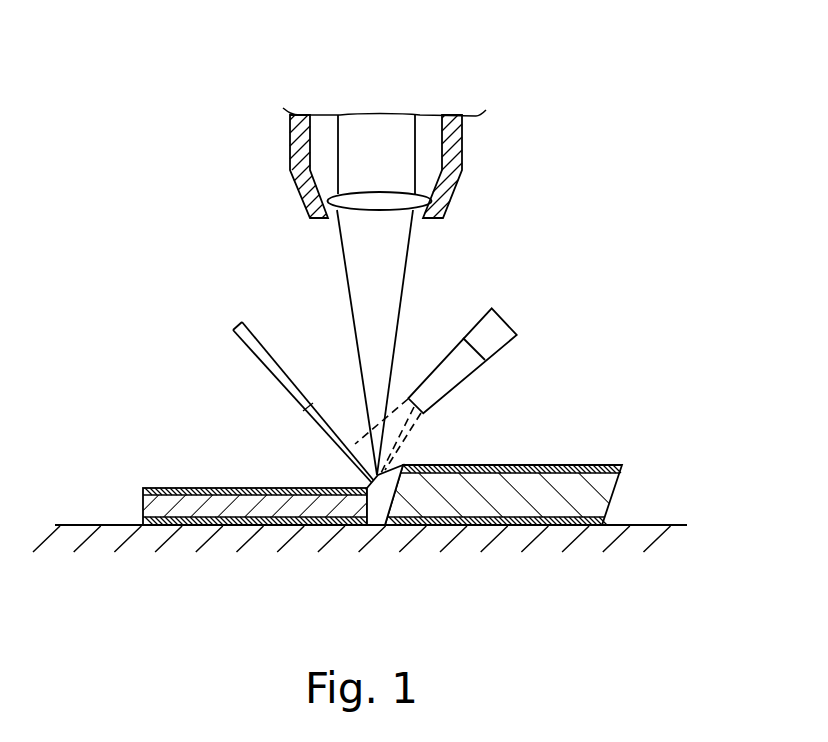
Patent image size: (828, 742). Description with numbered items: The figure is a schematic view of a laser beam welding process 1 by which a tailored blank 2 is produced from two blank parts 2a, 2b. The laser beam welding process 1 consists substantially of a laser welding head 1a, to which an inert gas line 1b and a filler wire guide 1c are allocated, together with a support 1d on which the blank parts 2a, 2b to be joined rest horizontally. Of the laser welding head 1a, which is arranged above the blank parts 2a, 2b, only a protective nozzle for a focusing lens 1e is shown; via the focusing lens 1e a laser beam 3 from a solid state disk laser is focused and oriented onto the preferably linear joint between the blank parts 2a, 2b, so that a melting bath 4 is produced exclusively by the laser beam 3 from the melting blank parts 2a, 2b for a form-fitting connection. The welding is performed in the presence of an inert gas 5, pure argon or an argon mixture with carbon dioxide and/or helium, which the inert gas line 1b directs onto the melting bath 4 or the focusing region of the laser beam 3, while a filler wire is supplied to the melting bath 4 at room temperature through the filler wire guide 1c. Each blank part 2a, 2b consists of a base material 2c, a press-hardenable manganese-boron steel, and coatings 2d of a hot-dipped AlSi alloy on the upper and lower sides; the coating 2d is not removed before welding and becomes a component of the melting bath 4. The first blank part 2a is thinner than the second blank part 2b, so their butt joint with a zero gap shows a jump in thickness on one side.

The laser beam welding process 1 is at (543, 181).
The laser welding head 1a is at (458, 157).
The inert gas line 1b is at (462, 372).
The filler wire guide 1c is at (240, 330).
The support 1d is at (660, 525).
The focusing lens 1e is at (383, 205).
The tailored blank 2 is at (170, 446).
The first blank part 2a is at (228, 505).
The second blank part 2b is at (483, 497).
The base material 2c is at (610, 488).
The coating 2d is at (157, 490).
The laser beam 3 is at (385, 290).
The melting bath 4 is at (380, 483).
The inert gas 5 is at (402, 443).